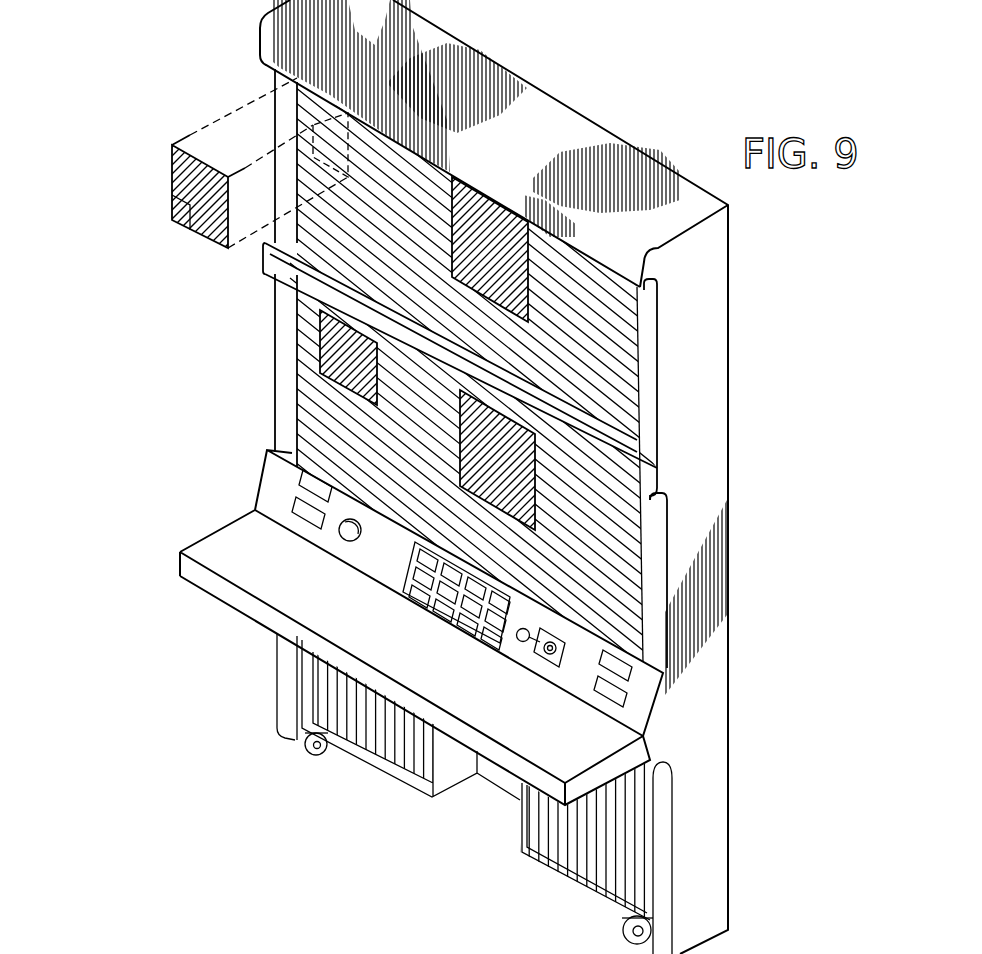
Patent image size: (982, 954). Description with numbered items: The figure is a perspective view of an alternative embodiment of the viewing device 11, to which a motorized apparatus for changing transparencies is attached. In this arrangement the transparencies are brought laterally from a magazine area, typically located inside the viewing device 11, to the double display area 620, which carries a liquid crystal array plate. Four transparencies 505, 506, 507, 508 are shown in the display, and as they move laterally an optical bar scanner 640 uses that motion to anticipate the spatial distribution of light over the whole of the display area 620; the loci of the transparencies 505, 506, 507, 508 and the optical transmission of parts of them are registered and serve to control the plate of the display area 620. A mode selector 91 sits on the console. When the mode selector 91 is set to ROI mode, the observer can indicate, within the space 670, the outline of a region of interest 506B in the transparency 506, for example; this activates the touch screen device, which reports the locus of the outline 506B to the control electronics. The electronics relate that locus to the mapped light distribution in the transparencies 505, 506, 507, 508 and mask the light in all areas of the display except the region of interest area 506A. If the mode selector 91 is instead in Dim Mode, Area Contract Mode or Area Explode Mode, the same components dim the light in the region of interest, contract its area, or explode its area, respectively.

The viewing device 11 is at (606, 128).
The mode selector 91 is at (340, 530).
The transparency 505 is at (487, 220).
The transparency 506 is at (172, 165).
The region of interest area 506A is at (296, 140).
The ROI outline 506B is at (172, 207).
The transparency 507 is at (520, 490).
The transparency 508 is at (320, 345).
The display area 620 is at (640, 343).
The optical bar scanner 640 is at (612, 650).
The space 670 is at (297, 85).